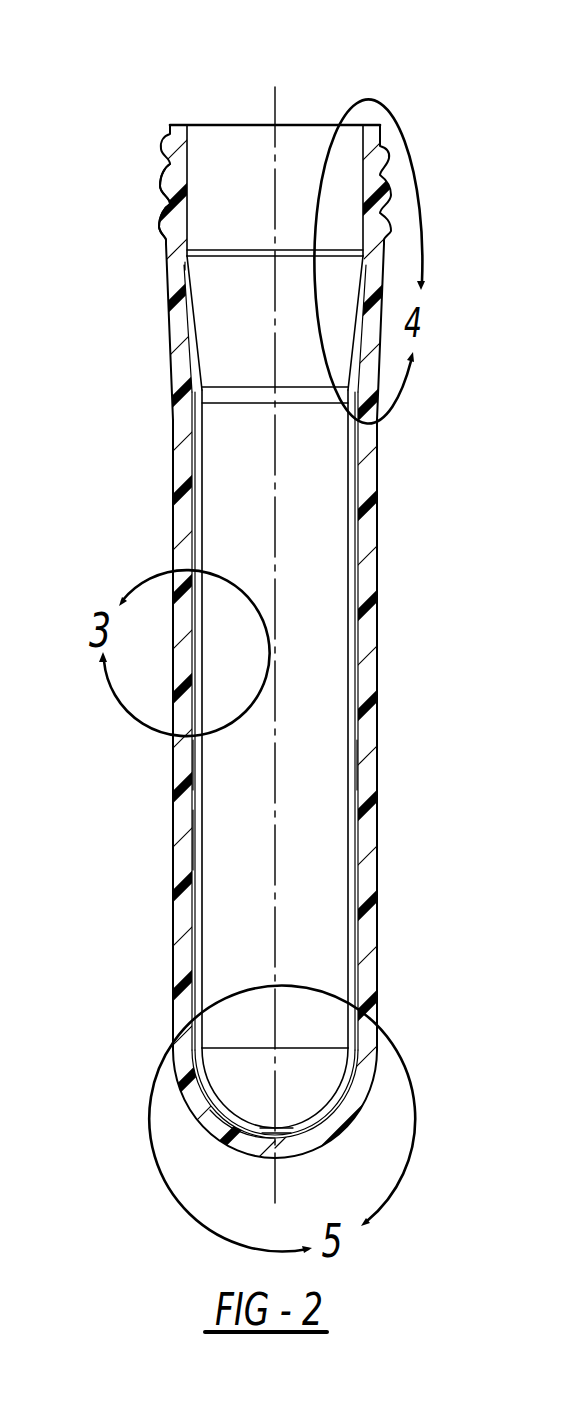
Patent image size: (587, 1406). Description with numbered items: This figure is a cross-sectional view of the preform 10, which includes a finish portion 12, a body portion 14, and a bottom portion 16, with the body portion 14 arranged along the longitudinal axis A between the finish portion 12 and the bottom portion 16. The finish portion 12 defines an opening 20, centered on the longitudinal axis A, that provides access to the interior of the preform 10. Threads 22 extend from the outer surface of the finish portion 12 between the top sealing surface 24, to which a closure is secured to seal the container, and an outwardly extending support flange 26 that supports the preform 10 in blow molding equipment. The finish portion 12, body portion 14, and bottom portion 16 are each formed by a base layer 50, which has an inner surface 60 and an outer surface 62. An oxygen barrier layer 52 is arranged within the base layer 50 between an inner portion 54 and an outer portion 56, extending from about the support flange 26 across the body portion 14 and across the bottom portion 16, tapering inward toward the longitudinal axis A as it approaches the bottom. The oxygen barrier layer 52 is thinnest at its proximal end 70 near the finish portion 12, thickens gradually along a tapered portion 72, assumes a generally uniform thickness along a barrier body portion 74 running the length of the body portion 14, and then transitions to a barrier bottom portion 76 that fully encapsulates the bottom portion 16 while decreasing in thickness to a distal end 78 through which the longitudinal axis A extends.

The preform 10 is at (293, 650).
The finish portion 12 is at (211, 131).
The body portion 14 is at (172, 430).
The bottom portion 16 is at (222, 1152).
The opening 20 is at (313, 125).
The threads 22 is at (168, 175).
The top sealing surface 24 is at (180, 125).
The support flange 26 is at (160, 235).
The base layer 50 is at (212, 720).
The oxygen barrier layer 52 is at (192, 458).
The inner portion 54 is at (203, 540).
The outer portion 56 is at (175, 543).
The inner surface 60 is at (203, 855).
The outer surface 62 is at (177, 875).
The proximal end 70 is at (172, 273).
The tapered portion 72 is at (180, 393).
The barrier body portion 74 is at (195, 763).
The barrier bottom portion 76 is at (222, 1128).
The distal end 78 is at (292, 1137).
The longitudinal axis A is at (275, 102).